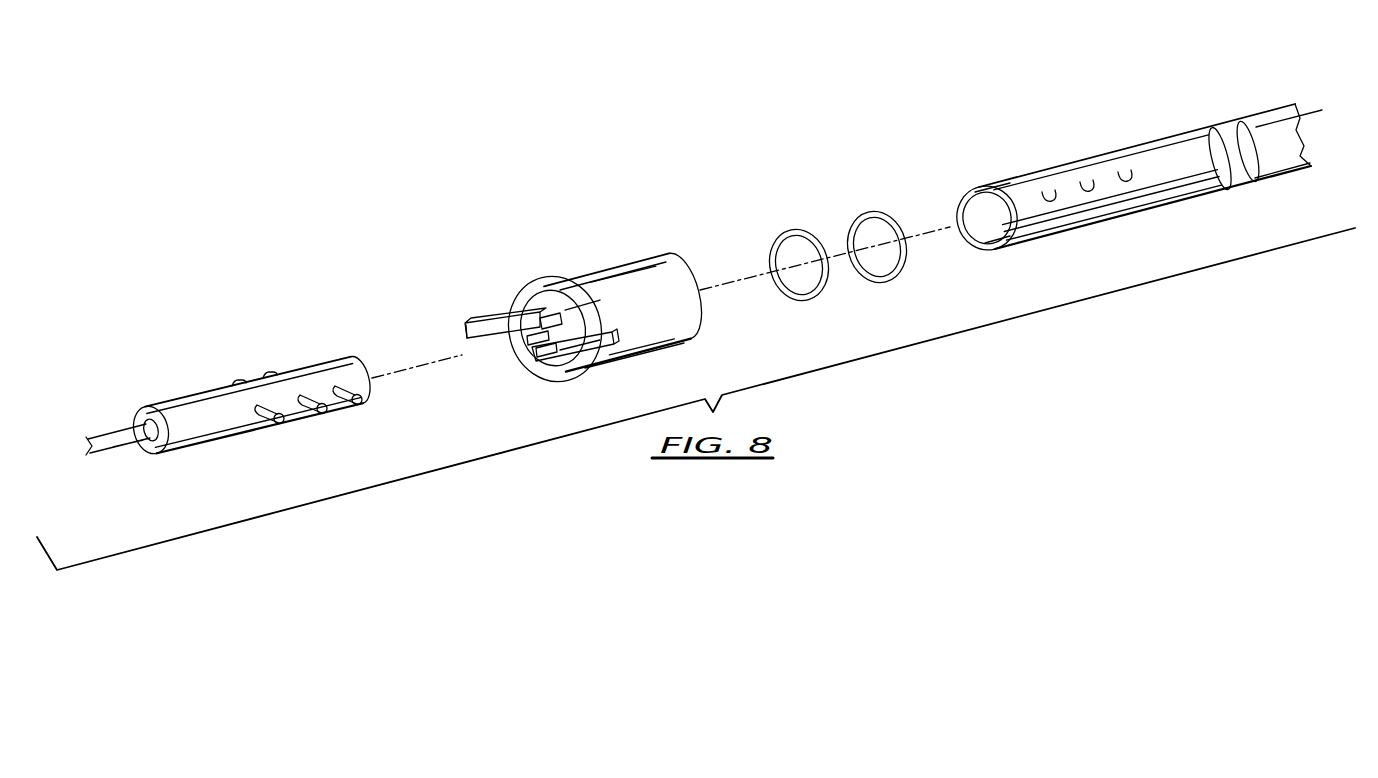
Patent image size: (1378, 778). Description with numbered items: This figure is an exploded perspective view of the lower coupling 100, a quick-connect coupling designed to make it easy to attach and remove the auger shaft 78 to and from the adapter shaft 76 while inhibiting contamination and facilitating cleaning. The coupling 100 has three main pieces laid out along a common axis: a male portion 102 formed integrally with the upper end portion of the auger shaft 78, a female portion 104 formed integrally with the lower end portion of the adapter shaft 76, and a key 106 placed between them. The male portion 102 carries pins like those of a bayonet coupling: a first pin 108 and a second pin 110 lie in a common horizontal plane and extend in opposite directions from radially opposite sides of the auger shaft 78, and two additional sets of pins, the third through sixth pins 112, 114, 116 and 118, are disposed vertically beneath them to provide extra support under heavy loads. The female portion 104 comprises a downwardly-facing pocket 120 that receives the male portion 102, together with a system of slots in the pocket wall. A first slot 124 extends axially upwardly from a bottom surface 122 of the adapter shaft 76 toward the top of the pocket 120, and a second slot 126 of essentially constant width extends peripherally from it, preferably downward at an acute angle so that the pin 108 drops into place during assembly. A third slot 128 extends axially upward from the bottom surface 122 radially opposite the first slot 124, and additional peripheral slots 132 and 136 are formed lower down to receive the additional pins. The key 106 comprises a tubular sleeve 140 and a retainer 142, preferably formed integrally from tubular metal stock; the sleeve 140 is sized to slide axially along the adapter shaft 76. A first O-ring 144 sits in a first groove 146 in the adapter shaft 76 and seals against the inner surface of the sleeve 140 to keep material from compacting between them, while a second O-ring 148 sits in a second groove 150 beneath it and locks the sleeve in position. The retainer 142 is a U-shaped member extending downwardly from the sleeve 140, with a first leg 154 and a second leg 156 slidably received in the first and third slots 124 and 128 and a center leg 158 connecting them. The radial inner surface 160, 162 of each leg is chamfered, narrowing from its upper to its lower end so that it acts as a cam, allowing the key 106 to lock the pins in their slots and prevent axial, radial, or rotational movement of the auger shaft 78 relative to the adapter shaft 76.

The adapter shaft 76 is at (1276, 102).
The auger shaft 78 is at (120, 452).
The lower coupling 100 is at (601, 188).
The male portion 102 is at (340, 348).
The female portion 104 is at (1122, 137).
The key 106 is at (657, 251).
The first pin 108 is at (361, 402).
The second pin 110 is at (272, 372).
The third pin 112 is at (324, 414).
The fourth pin 114 is at (238, 381).
The fifth pin 116 is at (280, 424).
The sixth pin 118 is at (205, 388).
The pocket 120 is at (966, 240).
The bottom surface 122 is at (968, 192).
The first slot 124 is at (1167, 188).
The second slot 126 is at (1129, 176).
The third slot 128 is at (960, 209).
The additional peripheral slot 132 is at (1089, 183).
The additional peripheral slot 136 is at (1050, 191).
The tubular sleeve 140 is at (687, 326).
The retainer 142 is at (490, 313).
The first O-ring 144 is at (861, 214).
The first groove 146 is at (1290, 163).
The second O-ring 148 is at (787, 231).
The second groove 150 is at (1228, 182).
The first leg 154 is at (582, 366).
The second leg 156 is at (466, 330).
The center leg 158 is at (545, 323).
The radial inner surface 160 is at (534, 350).
The radial inner surface 162 is at (528, 344).